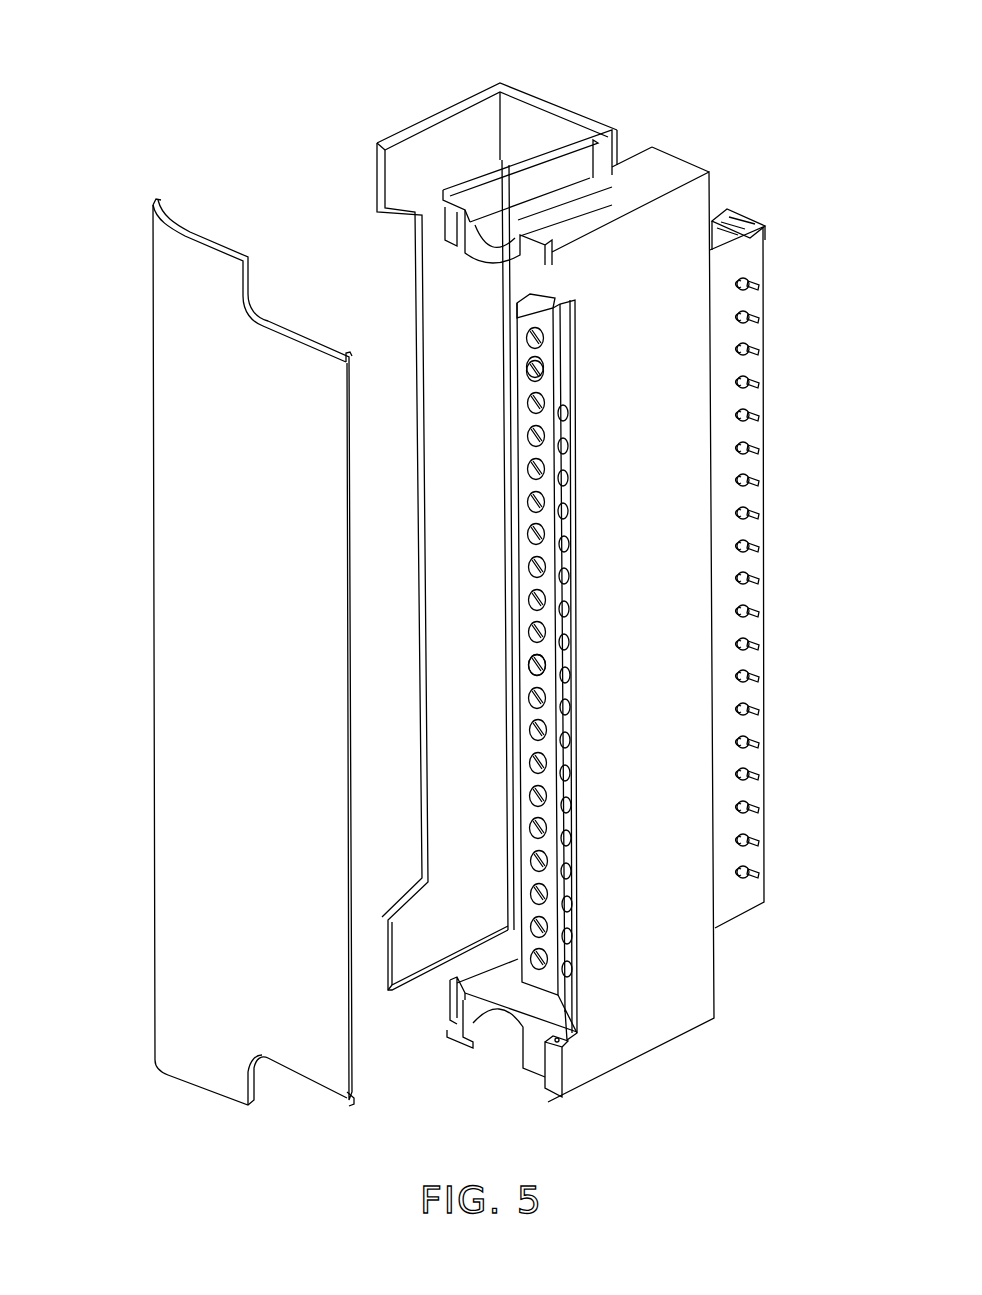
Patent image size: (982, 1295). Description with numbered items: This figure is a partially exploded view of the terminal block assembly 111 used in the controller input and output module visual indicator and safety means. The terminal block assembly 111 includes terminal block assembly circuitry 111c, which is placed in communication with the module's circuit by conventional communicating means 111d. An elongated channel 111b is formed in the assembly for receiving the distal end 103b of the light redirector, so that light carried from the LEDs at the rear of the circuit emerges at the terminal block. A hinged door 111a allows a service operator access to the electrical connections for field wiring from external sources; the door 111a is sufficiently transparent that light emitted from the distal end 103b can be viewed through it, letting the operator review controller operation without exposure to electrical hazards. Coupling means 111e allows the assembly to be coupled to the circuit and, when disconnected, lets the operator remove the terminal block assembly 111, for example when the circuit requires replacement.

The terminal block assembly 111 is at (308, 137).
The hinged door 111a is at (155, 785).
The elongated channel 111b is at (567, 965).
The terminal block assembly circuitry 111c is at (533, 367).
The conventional communicating means 111d is at (743, 258).
The coupling means 111e is at (614, 165).
The distal end 103b is at (638, 428).